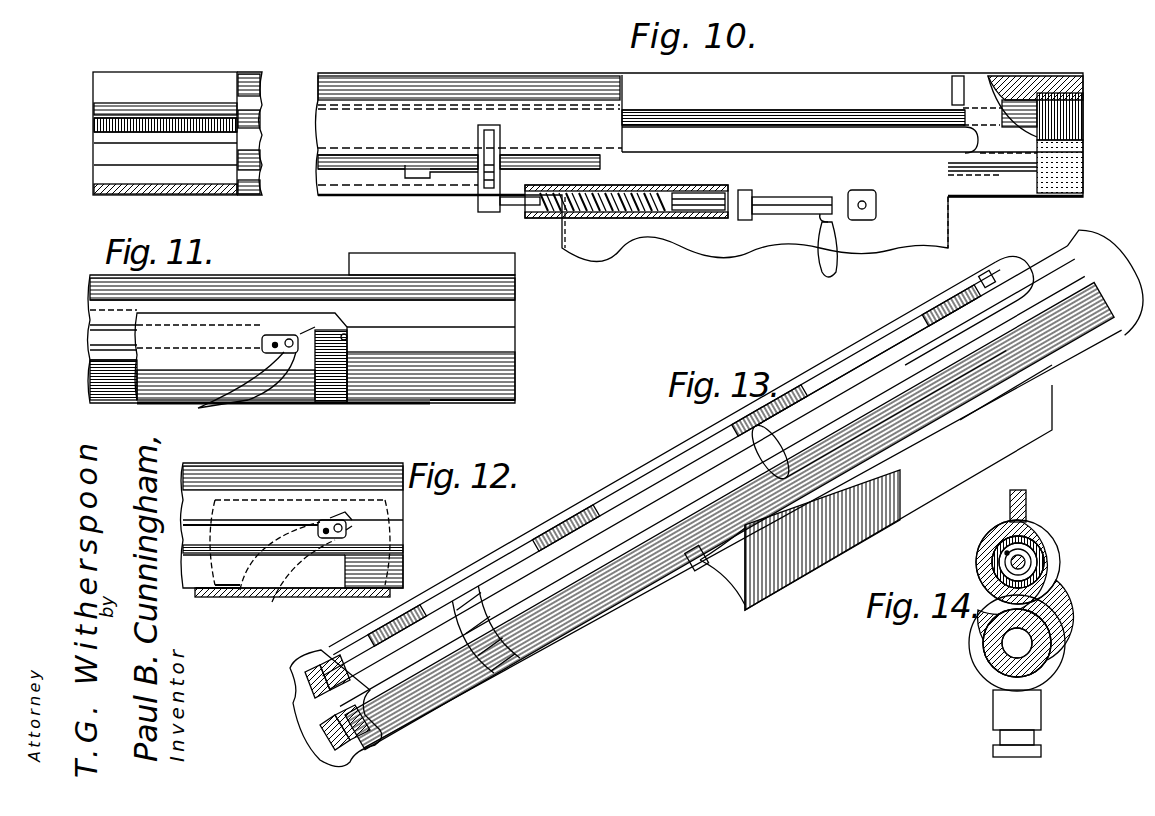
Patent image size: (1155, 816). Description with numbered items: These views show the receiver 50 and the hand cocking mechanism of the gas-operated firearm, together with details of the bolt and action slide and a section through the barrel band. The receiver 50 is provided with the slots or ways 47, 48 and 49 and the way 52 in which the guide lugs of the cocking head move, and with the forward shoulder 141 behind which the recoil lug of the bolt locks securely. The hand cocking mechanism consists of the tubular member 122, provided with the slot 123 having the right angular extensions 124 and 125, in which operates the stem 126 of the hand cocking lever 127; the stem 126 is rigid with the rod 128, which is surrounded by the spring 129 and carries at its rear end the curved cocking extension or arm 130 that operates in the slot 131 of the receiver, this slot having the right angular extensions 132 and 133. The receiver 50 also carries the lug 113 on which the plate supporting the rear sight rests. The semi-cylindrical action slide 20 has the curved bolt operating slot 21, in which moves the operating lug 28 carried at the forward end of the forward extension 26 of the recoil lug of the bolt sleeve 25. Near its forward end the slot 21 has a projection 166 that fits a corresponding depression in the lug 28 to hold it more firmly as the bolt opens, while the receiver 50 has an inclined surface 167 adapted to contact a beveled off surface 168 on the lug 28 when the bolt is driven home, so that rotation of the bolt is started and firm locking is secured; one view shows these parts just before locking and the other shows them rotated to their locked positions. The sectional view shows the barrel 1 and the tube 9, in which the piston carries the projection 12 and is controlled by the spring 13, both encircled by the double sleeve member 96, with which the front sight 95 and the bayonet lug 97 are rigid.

In FIG. 14, the barrel 1 is at (1042, 628).
In FIG. 14, the tube 9 is at (1046, 574).
In FIG. 14, the projection 12 is at (1038, 560).
In FIG. 14, the spring 13 is at (1028, 556).
In FIG. 11, the action slide 20 is at (296, 410).
In FIG. 12, the action slide 20 is at (332, 492).
In FIG. 11, the bolt operating slot 21 is at (246, 410).
In FIG. 12, the bolt operating slot 21 is at (268, 604).
In FIG. 11, the bolt sleeve 25 is at (112, 356).
In FIG. 12, the bolt sleeve 25 is at (212, 595).
In FIG. 12, the forward extension 26 is at (198, 530).
In FIG. 11, the operating lug 28 is at (291, 338).
In FIG. 12, the operating lug 28 is at (350, 542).
In FIG. 10, the way 47 is at (145, 82).
In FIG. 13, the way 47 is at (690, 458).
In FIG. 10, the way 48 is at (95, 128).
In FIG. 13, the way 48 is at (298, 672).
In FIG. 10, the way 49 is at (108, 170).
In FIG. 13, the way 49 is at (322, 740).
In FIG. 10, the receiver 50 is at (486, 73).
In FIG. 11, the receiver 50 is at (100, 292).
In FIG. 12, the receiver 50 is at (298, 467).
In FIG. 13, the receiver 50 is at (882, 345).
In FIG. 13, the way 52 is at (372, 726).
In FIG. 14, the front sight 95 is at (1010, 512).
In FIG. 14, the double sleeve member 96 is at (980, 554).
In FIG. 14, the bayonet lug 97 is at (1005, 705).
In FIG. 11, the lug 113 is at (425, 264).
In FIG. 10, the tubular member 122 is at (648, 219).
In FIG. 10, the slot 123 is at (808, 204).
In FIG. 10, the right angular extension 124 is at (747, 190).
In FIG. 10, the right angular extension 125 is at (818, 222).
In FIG. 10, the stem 126 is at (838, 227).
In FIG. 10, the hand cocking lever 127 is at (838, 262).
In FIG. 10, the rod 128 is at (514, 206).
In FIG. 10, the spring 129 is at (652, 192).
In FIG. 10, the cocking extension or arm 130 is at (492, 165).
In FIG. 10, the slot 131 is at (456, 172).
In FIG. 10, the right angular extension 132 is at (478, 126).
In FIG. 13, the right angular extension 132 is at (690, 580).
In FIG. 10, the right angular extension 133 is at (406, 180).
In FIG. 10, the forward shoulder 141 is at (632, 116).
In FIG. 13, the forward shoulder 141 is at (842, 434).
In FIG. 11, the projection 166 is at (276, 336).
In FIG. 10, the inclined surface 167 is at (958, 76).
In FIG. 11, the inclined surface 167 is at (349, 337).
In FIG. 12, the inclined surface 167 is at (350, 520).
In FIG. 13, the inclined surface 167 is at (1000, 280).
In FIG. 11, the beveled off surface 168 is at (300, 332).
In FIG. 12, the beveled off surface 168 is at (348, 532).